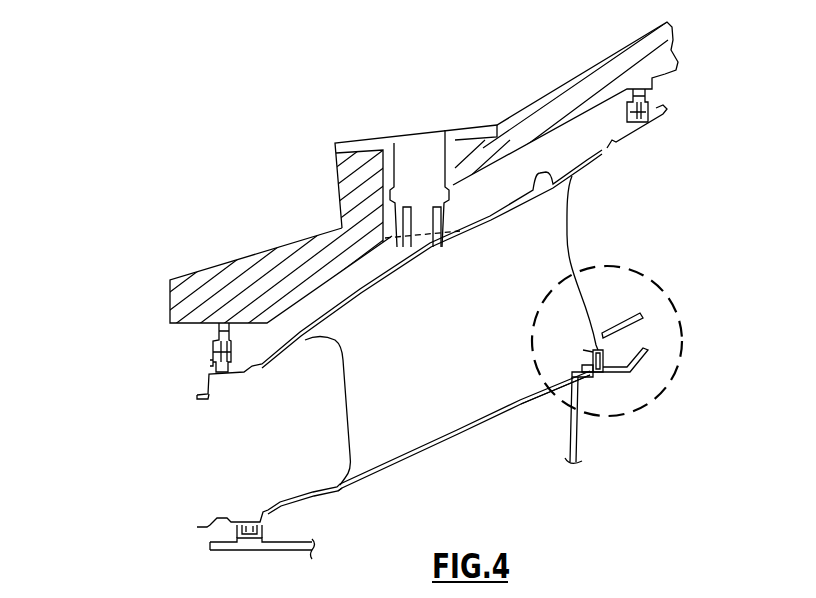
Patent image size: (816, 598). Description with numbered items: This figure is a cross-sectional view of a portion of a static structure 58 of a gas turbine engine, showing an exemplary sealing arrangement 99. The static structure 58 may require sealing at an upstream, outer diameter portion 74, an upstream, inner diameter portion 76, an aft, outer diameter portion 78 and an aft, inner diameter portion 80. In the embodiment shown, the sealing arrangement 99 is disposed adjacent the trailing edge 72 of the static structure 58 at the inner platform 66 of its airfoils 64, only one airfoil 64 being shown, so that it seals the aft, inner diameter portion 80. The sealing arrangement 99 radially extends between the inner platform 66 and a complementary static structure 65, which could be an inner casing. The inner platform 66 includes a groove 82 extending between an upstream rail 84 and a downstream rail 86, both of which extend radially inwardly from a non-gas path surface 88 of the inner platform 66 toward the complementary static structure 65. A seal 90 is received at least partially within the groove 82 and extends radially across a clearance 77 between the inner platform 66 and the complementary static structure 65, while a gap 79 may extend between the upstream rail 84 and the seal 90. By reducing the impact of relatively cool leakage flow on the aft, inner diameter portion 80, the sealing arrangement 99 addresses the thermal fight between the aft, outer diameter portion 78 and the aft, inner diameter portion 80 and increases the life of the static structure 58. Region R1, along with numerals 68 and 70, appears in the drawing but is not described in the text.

The static structure 58 is at (314, 393).
The airfoil 64 is at (453, 330).
The complementary static structure 65 is at (580, 440).
The inner platform 66 is at (455, 447).
The first panel 68 is at (498, 218).
The core flow path side 70 is at (83, 450).
The trailing edge 72 is at (701, 178).
The upstream, outer diameter portion 74 is at (166, 390).
The upstream, inner diameter portion 76 is at (186, 556).
The clearance 77 is at (574, 380).
The aft, outer diameter portion 78 is at (687, 102).
The gap 79 is at (583, 350).
The aft, inner diameter portion 80 is at (580, 323).
The groove 82 is at (595, 348).
The upstream rail 84 is at (583, 366).
The downstream rail 86 is at (640, 357).
The non-gas path surface 88 is at (522, 405).
The seal 90 is at (600, 374).
The sealing arrangement 99 is at (623, 342).
The detail region R1 is at (639, 273).